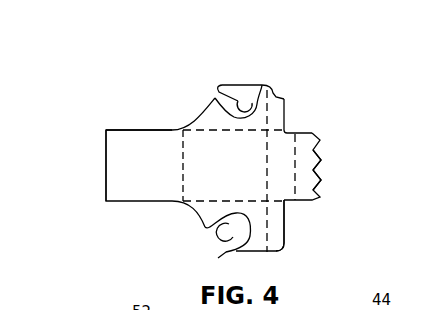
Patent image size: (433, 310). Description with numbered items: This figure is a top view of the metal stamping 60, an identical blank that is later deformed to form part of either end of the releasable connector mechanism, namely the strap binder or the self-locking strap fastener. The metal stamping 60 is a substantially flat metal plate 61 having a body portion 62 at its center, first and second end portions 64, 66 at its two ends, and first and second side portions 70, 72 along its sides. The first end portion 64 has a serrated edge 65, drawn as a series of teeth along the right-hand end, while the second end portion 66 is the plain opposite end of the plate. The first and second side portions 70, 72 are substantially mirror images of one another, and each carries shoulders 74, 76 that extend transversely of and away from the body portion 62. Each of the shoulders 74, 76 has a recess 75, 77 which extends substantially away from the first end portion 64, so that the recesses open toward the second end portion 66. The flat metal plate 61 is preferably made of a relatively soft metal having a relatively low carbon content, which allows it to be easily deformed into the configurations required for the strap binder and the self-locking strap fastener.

The metal stamping 60 is at (167, 92).
The flat metal plate 61 is at (125, 108).
The body portion 62 is at (279, 150).
The first end portion 64 is at (306, 176).
The serrated edge 65 is at (322, 182).
The second end portion 66 is at (98, 182).
The first side portion 70 is at (266, 106).
The second side portion 72 is at (291, 228).
The shoulder 74 is at (257, 96).
The recess 75 is at (235, 113).
The shoulder 76 is at (225, 251).
The recess 77 is at (230, 221).